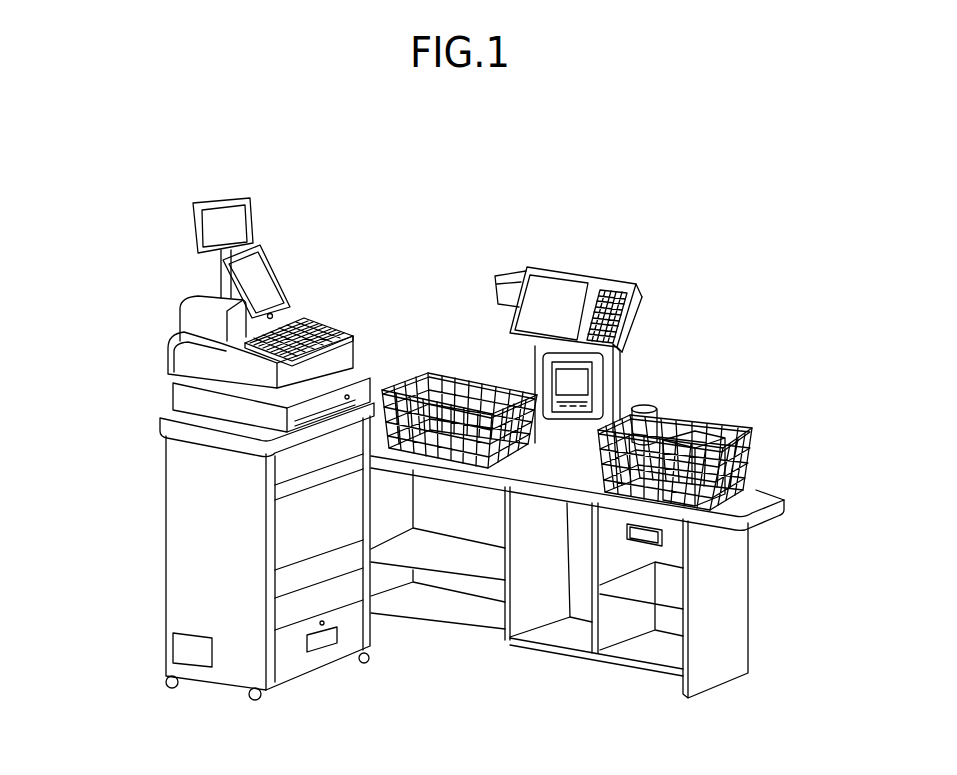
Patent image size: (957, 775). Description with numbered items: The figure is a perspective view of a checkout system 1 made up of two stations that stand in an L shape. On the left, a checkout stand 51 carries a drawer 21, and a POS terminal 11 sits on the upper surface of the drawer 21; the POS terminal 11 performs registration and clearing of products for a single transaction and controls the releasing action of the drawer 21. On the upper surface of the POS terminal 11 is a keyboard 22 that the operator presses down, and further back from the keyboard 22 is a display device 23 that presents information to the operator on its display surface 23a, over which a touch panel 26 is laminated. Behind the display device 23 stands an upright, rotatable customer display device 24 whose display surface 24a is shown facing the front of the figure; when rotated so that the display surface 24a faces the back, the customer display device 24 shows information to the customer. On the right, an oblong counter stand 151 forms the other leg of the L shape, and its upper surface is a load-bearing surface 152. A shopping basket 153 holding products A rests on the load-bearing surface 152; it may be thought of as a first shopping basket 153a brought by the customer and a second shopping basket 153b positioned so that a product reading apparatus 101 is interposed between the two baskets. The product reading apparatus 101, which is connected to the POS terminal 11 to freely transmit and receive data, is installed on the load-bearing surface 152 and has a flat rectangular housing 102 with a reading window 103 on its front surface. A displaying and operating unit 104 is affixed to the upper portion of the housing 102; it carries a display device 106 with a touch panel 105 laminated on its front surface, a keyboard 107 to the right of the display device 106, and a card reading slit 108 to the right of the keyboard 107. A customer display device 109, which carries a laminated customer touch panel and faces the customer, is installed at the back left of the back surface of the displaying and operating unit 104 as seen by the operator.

The checkout system 1 is at (128, 222).
The POS terminal 11 is at (150, 327).
The drawer 21 is at (186, 396).
The keyboard 22 is at (328, 328).
The display device 23 is at (264, 258).
The display surface 23a is at (275, 290).
The customer display device 24 is at (222, 197).
The display surface 24a is at (213, 212).
The touch panel 26 is at (242, 275).
The checkout stand 51 is at (185, 543).
The product reading apparatus 101 is at (498, 180).
The housing 102 is at (557, 437).
The reading window 103 is at (558, 384).
The displaying and operating unit 104 is at (542, 267).
The touch panel 105 is at (569, 280).
The display device 106 is at (590, 278).
The keyboard 107 is at (632, 277).
The card reading slit 108 is at (642, 294).
The customer display device 109 is at (503, 273).
The counter stand 151 is at (737, 618).
The load-bearing surface 152 is at (763, 497).
The shopping basket 153 is at (756, 414).
The first shopping basket 153a is at (755, 438).
The second shopping basket 153b is at (420, 392).
The products A is at (655, 400).